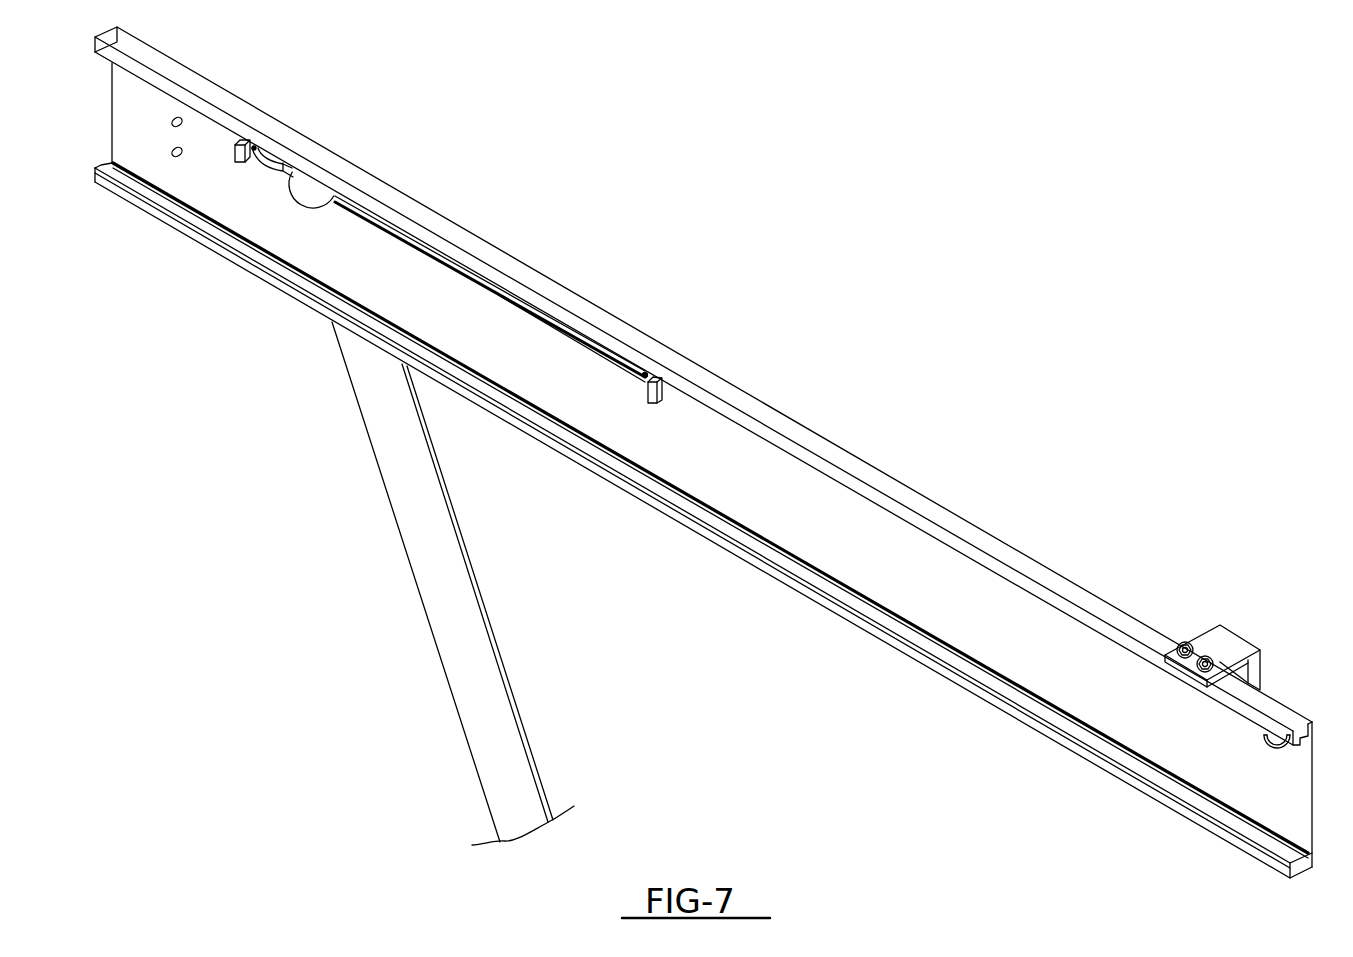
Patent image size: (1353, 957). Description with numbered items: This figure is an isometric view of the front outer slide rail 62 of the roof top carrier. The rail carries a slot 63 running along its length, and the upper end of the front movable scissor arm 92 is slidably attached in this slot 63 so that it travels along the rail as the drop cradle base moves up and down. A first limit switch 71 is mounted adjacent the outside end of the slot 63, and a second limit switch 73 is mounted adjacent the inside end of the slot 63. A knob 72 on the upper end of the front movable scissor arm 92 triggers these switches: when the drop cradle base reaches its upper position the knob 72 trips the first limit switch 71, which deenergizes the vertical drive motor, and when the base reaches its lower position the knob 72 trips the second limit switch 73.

The front outer slide rail 62 is at (847, 467).
The slot 63 is at (448, 268).
The first limit switch 71 is at (237, 158).
The knob 72 is at (315, 194).
The second limit switch 73 is at (660, 382).
The front movable scissor arm 92 is at (448, 623).